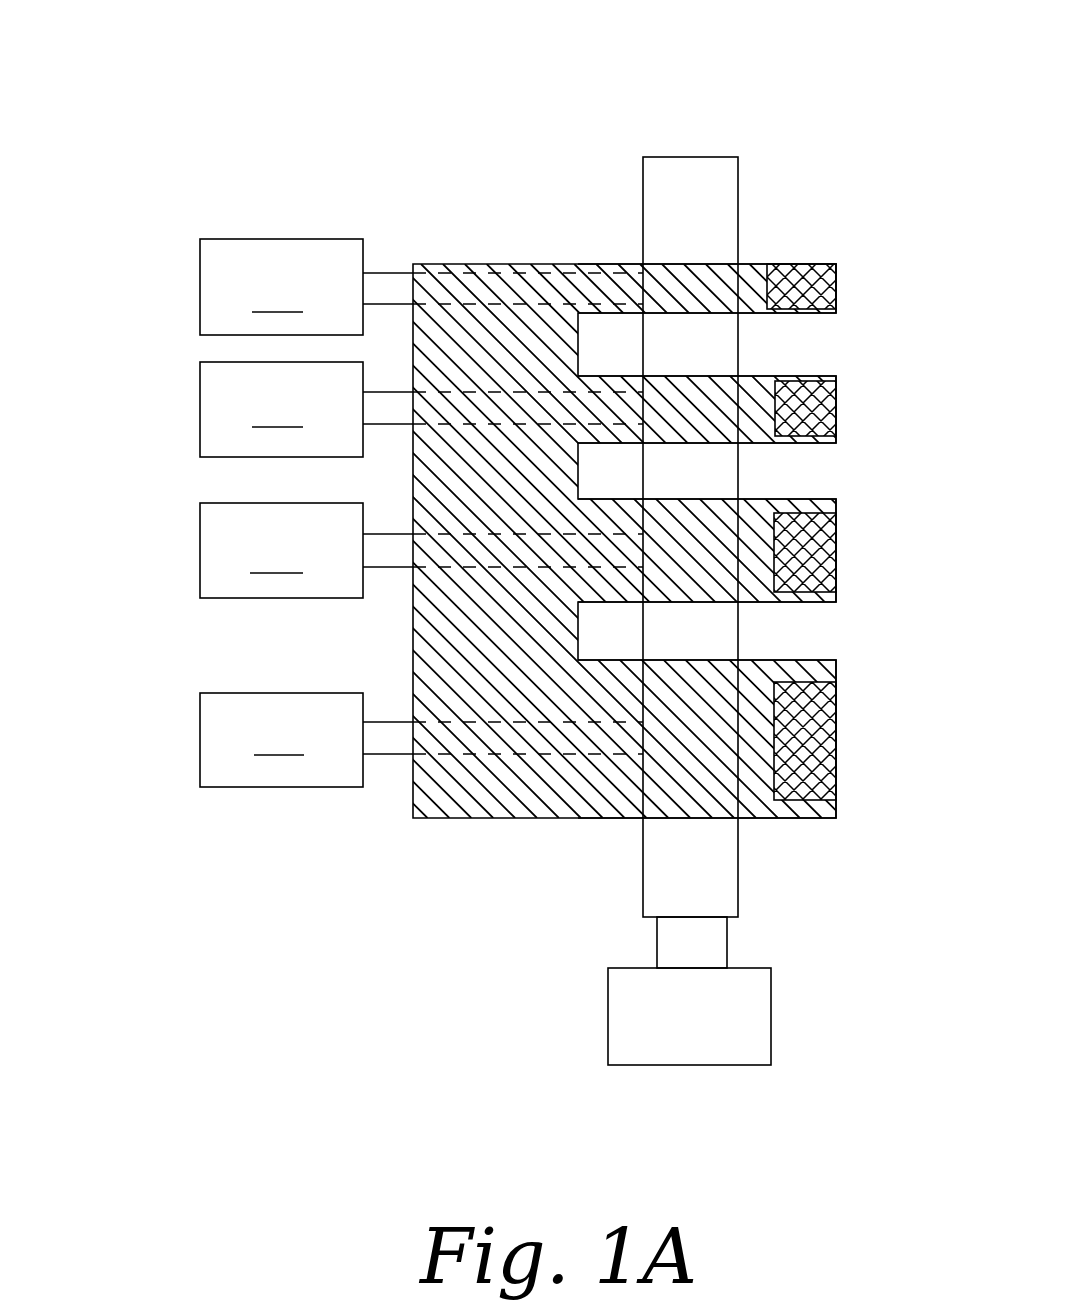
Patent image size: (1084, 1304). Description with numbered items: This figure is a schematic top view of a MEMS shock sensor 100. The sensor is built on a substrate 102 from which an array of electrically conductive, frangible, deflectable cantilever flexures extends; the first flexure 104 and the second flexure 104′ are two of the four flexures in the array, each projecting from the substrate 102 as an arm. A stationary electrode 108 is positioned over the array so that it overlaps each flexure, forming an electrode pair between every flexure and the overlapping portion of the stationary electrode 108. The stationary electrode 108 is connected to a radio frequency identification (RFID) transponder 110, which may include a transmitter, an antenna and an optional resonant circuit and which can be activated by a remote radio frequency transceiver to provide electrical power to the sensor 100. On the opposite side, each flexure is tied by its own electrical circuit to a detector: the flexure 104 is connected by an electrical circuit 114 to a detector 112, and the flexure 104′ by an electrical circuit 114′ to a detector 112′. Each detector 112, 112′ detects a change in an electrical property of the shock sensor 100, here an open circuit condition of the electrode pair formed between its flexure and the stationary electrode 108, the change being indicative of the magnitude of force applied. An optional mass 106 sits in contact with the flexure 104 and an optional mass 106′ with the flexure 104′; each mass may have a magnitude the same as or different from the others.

The shock sensor 100 is at (155, 80).
The substrate 102 is at (457, 818).
The cantilever flexure 104 is at (749, 266).
The cantilever flexure 104′ is at (758, 379).
The mass 106 is at (836, 283).
The mass 106′ is at (836, 405).
The stationary electrode 108 is at (660, 185).
The radio frequency identification (RFID) transponder 110 is at (755, 1025).
The detector 112 is at (281, 287).
The detector 112′ is at (281, 409).
The electrical circuit 114 is at (384, 270).
The electrical circuit 114′ is at (393, 427).